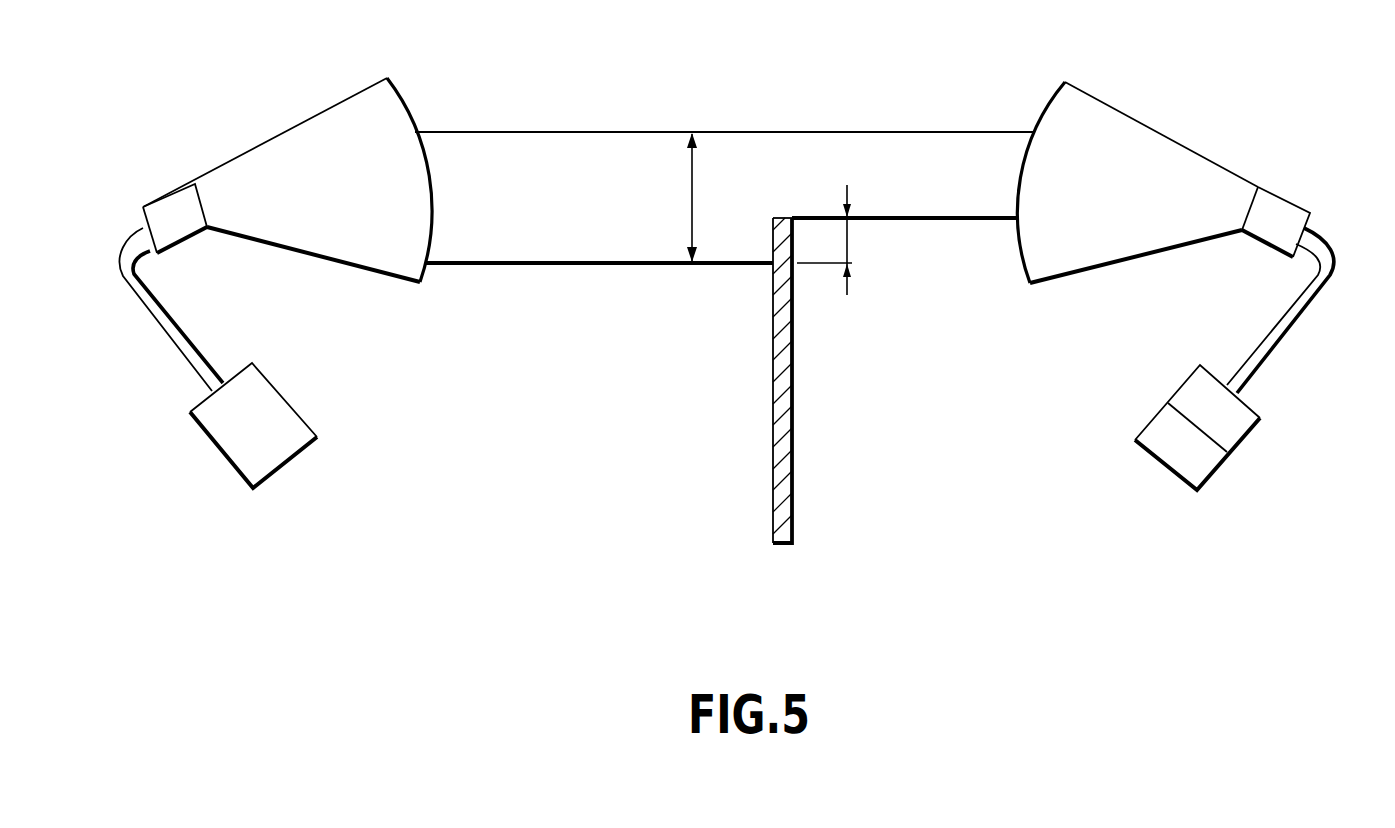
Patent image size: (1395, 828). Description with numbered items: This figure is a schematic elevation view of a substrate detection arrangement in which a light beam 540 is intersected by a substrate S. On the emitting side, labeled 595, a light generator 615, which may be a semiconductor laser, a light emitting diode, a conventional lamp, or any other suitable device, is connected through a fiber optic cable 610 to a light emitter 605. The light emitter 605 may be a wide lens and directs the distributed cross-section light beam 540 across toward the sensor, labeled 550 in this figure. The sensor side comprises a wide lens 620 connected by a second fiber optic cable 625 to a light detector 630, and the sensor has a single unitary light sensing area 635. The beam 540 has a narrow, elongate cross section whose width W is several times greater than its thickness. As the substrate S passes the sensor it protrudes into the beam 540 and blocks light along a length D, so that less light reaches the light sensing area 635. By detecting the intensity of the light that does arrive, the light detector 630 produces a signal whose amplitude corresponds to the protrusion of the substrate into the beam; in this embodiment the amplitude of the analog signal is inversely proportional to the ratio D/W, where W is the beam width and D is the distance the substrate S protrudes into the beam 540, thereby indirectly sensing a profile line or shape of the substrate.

The first transducer assembly 595 is at (255, 118).
The light emitter 605 is at (337, 127).
The fiber optic cable 610 is at (152, 322).
The light generator 615 is at (277, 390).
The light beam 540 is at (550, 130).
The width of the light beam W is at (690, 198).
The length along which the light beam is blocked D is at (848, 242).
The substrate S is at (792, 405).
The second transducer assembly 550 is at (1196, 121).
The wide lens 620 is at (1072, 143).
The fiber optic cable 625 is at (1283, 340).
The light detector 630 is at (1175, 470).
The light sensing area 635 is at (1213, 438).